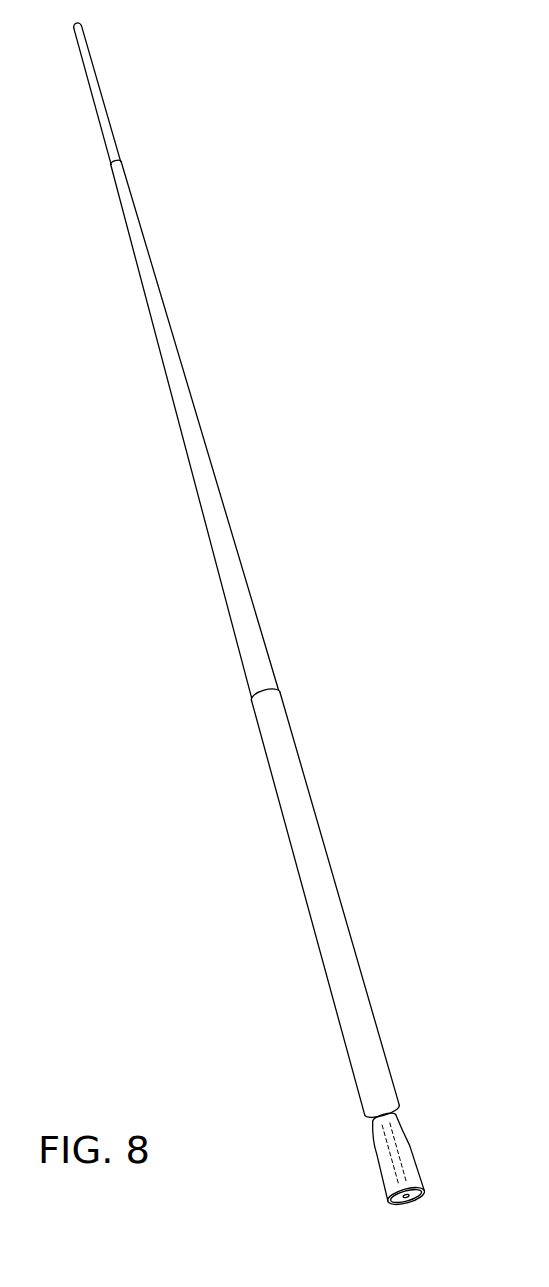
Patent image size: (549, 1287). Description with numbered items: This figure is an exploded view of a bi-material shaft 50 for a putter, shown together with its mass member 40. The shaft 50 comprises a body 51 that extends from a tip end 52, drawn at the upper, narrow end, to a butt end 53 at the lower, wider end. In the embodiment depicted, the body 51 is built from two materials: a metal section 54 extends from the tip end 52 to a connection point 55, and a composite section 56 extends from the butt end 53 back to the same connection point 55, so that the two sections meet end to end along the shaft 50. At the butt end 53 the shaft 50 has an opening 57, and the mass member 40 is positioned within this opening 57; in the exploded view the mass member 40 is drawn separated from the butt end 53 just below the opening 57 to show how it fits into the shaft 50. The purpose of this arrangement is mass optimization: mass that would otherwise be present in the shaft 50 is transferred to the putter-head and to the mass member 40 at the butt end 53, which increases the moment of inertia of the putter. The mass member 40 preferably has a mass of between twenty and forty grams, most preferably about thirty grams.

The mass member 40 is at (425, 1200).
The bi-material shaft 50 is at (320, 523).
The body 51 is at (201, 430).
The tip end 52 is at (96, 28).
The butt end 53 is at (435, 1102).
The metal section 54 is at (88, 81).
The connection point 55 is at (122, 162).
The composite section 56 is at (296, 785).
The opening 57 is at (371, 1121).